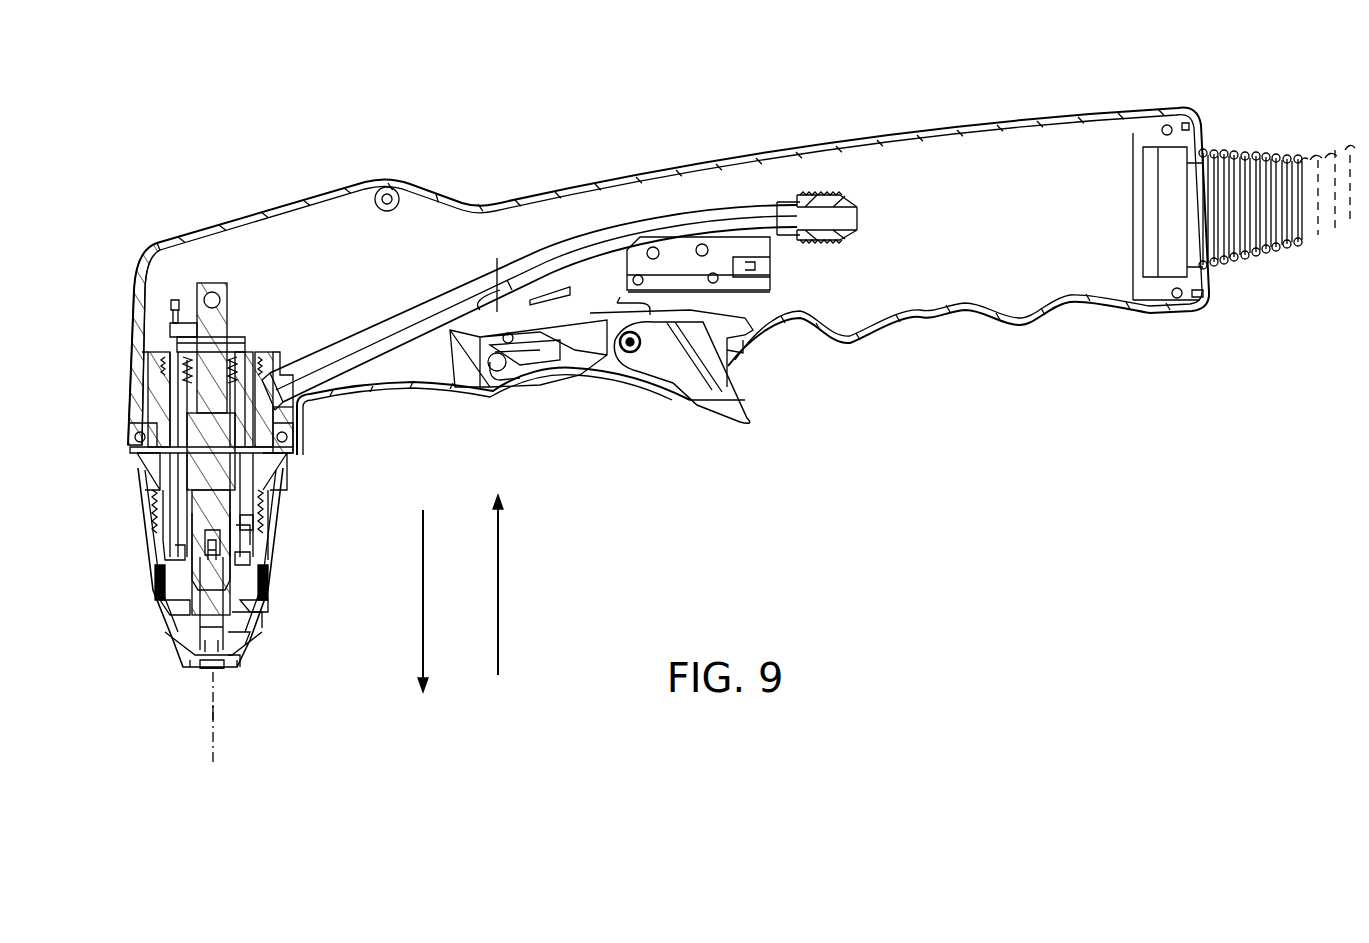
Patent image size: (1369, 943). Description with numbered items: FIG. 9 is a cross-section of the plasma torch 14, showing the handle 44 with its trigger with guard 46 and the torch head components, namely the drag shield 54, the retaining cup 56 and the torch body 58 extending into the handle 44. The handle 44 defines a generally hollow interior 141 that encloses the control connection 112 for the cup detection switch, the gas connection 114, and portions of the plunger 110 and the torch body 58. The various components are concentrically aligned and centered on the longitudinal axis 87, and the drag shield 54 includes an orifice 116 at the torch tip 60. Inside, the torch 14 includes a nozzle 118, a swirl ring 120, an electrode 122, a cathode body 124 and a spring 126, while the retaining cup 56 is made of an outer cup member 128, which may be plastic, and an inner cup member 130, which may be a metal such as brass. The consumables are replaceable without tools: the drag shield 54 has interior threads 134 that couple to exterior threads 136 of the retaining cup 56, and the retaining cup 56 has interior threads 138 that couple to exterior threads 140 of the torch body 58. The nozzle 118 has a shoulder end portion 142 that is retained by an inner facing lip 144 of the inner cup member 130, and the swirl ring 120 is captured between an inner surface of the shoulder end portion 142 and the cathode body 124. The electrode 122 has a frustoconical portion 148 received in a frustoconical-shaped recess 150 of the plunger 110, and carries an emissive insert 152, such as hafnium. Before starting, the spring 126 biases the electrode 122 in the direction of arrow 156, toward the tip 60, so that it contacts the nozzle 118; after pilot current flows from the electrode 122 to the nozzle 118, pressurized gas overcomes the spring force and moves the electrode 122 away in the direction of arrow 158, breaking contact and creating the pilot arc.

The torch 14 is at (712, 74).
The handle 44 is at (706, 150).
The trigger with guard 46 is at (702, 412).
The drag shield 54 is at (180, 652).
The retaining cup 56 is at (265, 606).
The torch body 58 is at (297, 462).
The torch tip 60 is at (208, 701).
The longitudinal axis 87 is at (215, 712).
The plunger 110 is at (220, 283).
The control connection 112 is at (175, 300).
The gas connection 114 is at (548, 257).
The orifice 116 is at (217, 673).
The nozzle 118 is at (250, 640).
The swirl ring 120 is at (258, 568).
The electrode 122 is at (215, 550).
The cathode body 124 is at (242, 528).
The spring 126 is at (172, 332).
The outer cup member 128 is at (240, 558).
The inner cup member 130 is at (170, 545).
The interior threads 134 is at (270, 598).
The exterior threads 136 is at (162, 585).
The interior threads 138 is at (165, 520).
The exterior threads 140 is at (170, 508).
The hollow interior 141 is at (497, 257).
The shoulder end portion 142 is at (175, 612).
The inner facing lip 144 is at (265, 625).
The frustoconical portion 148 is at (247, 520).
The frustoconical-shaped recess 150 is at (195, 512).
The emissive insert 152 is at (237, 665).
The arrow 156 is at (424, 593).
The arrow 158 is at (499, 591).